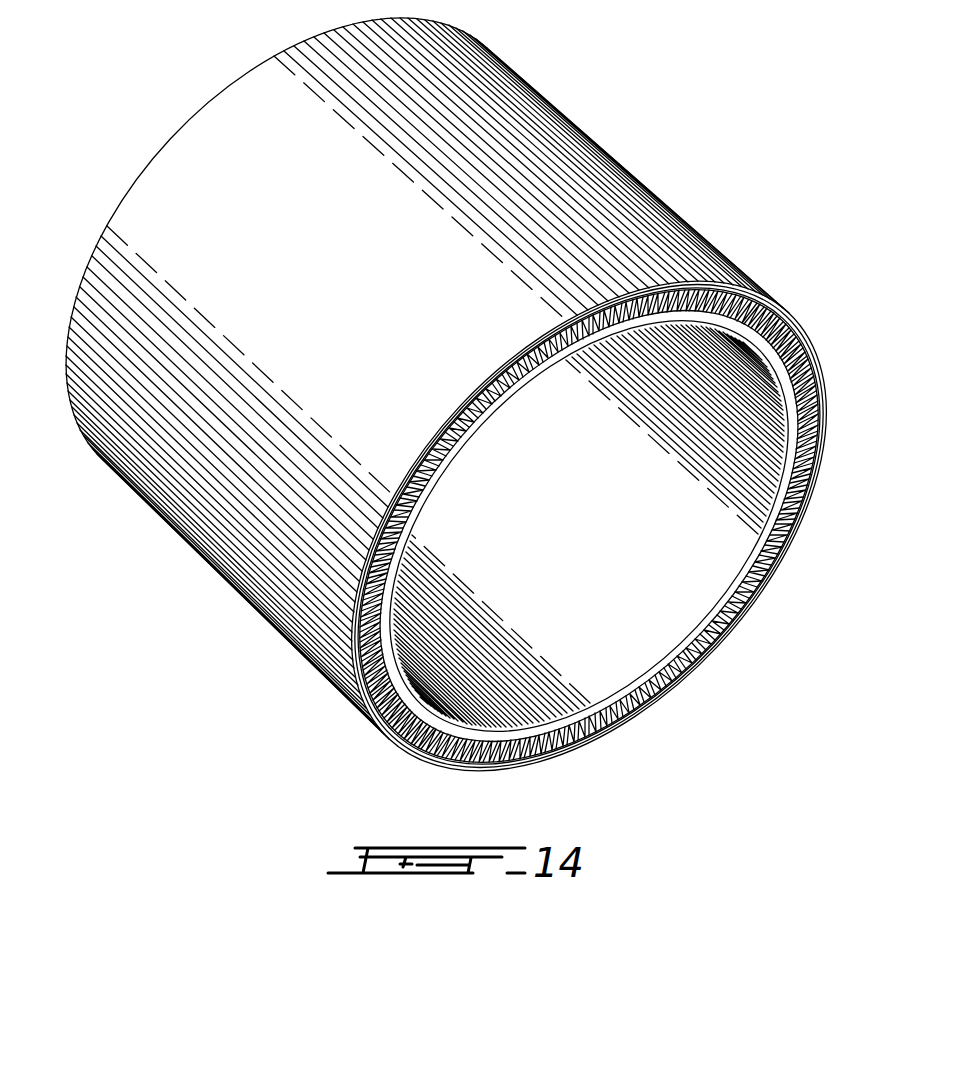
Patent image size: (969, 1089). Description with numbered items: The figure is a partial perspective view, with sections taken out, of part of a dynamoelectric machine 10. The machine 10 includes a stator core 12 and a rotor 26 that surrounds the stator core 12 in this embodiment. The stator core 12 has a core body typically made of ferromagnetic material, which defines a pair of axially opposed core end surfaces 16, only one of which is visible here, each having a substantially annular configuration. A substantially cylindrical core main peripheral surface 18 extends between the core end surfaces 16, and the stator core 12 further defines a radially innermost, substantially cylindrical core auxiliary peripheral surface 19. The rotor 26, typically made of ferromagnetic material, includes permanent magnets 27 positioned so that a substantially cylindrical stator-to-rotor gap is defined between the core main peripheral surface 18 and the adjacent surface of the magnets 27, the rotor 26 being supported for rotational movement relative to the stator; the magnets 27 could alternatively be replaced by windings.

The dynamoelectric machine 10 is at (283, 794).
The stator core 12 is at (663, 683).
The core end surface 16 is at (727, 597).
The core main peripheral surface 18 is at (722, 290).
The core auxiliary peripheral surface 19 is at (708, 464).
The rotor 26 is at (589, 133).
The permanent magnets 27 is at (352, 646).